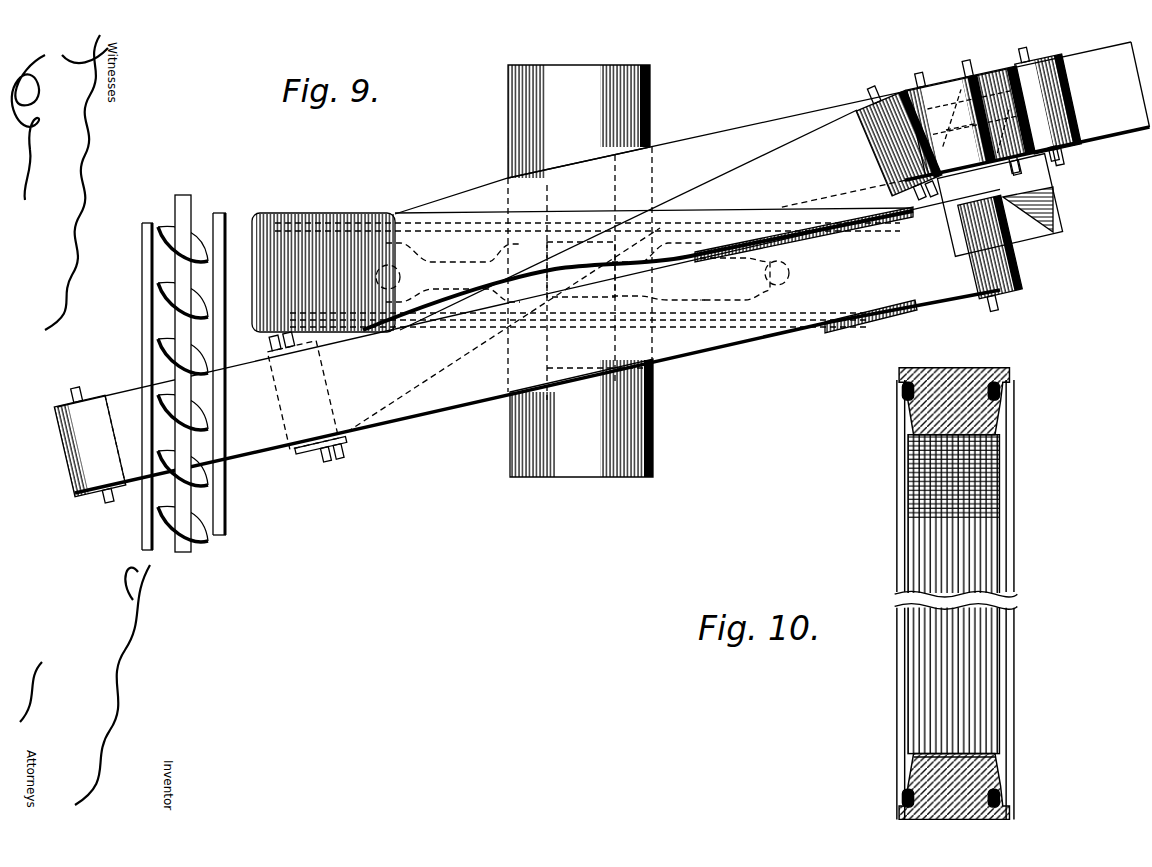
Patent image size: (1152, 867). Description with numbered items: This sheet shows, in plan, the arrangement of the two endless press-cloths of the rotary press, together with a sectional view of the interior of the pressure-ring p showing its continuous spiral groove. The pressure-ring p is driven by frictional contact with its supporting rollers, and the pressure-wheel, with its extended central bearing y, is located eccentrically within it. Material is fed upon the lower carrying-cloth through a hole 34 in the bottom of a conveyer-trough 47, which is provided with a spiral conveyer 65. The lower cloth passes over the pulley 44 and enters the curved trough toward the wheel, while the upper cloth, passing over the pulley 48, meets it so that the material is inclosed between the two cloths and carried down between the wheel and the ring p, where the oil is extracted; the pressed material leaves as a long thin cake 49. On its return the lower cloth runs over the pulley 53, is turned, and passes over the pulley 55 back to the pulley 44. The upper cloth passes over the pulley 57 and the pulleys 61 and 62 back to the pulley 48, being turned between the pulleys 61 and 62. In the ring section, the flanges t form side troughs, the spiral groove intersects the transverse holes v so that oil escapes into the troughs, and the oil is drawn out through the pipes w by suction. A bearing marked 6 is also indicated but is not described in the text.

In FIG. 9, the pressure-ring p is at (342, 213).
In FIG. 10, the pressure-ring p is at (981, 773).
In FIG. 9, the extended central bearing y is at (650, 110).
In FIG. 9, the hole 34 is at (153, 443).
In FIG. 9, the pulley 44 is at (90, 395).
In FIG. 9, the conveyer-trough 47 is at (143, 315).
In FIG. 9, the spiral conveyer 65 is at (165, 293).
In FIG. 9, the pulley 48 is at (317, 448).
In FIG. 9, the pulley 62 is at (333, 452).
In FIG. 9, the long thin cake 49 is at (1097, 136).
In FIG. 9, the pulley 61 is at (872, 143).
In FIG. 9, the pulley 55 is at (999, 68).
In FIG. 9, the bearing 6 is at (960, 137).
In FIG. 9, the pulley 57 is at (1070, 92).
In FIG. 9, the pulley 53 is at (1030, 192).
In FIG. 10, the flanges t is at (899, 388).
In FIG. 10, the pipes w is at (989, 555).
In FIG. 10, the transverse holes v is at (912, 760).